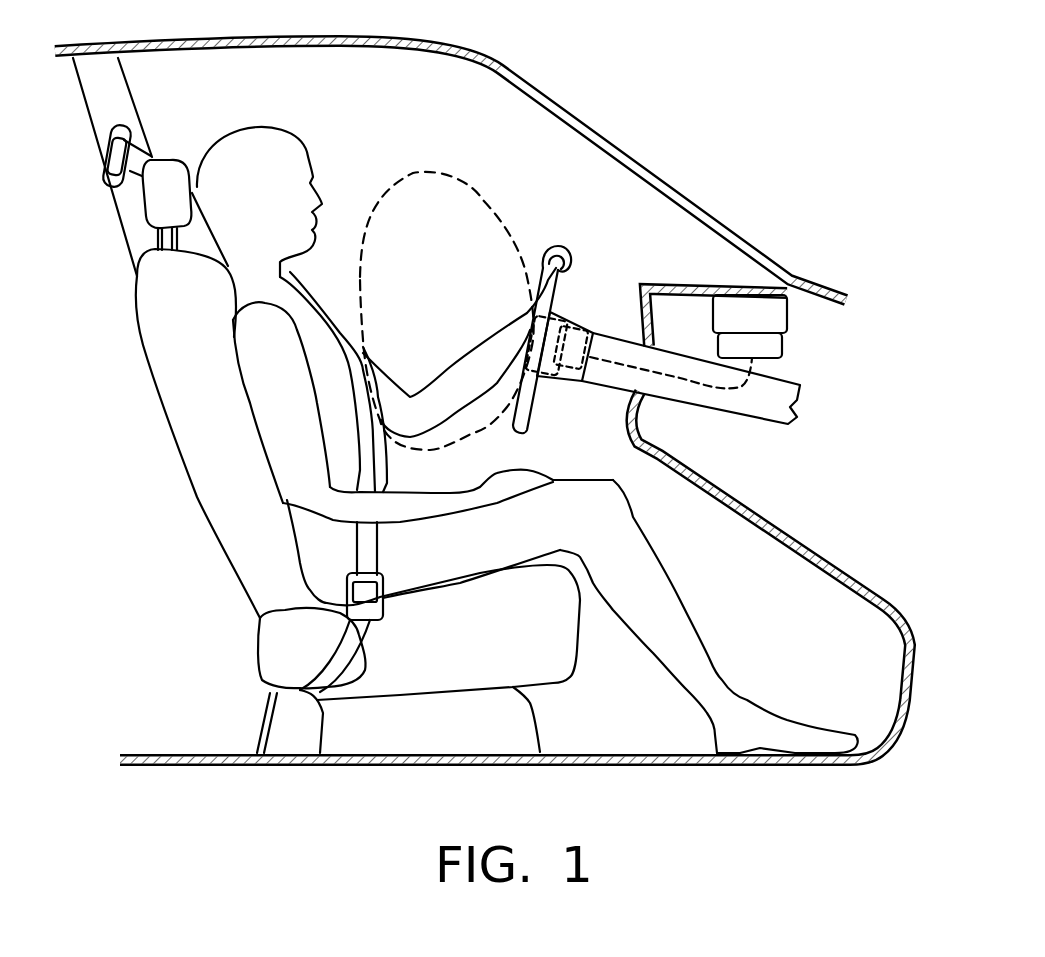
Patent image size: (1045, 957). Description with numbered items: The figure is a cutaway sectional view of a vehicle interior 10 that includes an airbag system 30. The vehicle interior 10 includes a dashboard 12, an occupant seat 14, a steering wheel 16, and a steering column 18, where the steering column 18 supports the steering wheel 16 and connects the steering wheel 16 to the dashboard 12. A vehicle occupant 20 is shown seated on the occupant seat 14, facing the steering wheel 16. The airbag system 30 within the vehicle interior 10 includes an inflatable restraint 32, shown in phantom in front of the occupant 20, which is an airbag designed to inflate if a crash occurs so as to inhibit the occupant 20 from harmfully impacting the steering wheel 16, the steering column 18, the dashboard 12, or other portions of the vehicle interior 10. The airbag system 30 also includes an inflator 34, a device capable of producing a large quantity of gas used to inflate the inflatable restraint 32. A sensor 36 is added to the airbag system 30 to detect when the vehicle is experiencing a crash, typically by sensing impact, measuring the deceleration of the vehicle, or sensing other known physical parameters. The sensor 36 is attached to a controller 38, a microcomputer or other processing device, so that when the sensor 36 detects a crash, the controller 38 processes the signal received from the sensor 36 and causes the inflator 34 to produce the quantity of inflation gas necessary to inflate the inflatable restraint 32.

The vehicle interior 10 is at (550, 140).
The dashboard 12 is at (700, 283).
The occupant seat 14 is at (312, 642).
The steering wheel 16 is at (525, 407).
The steering column 18 is at (620, 377).
The vehicle occupant 20 is at (273, 170).
The airbag system 30 is at (590, 259).
The inflatable restraint 32 is at (417, 173).
The inflator 34 is at (573, 343).
The sensor 36 is at (790, 312).
The controller 38 is at (783, 347).